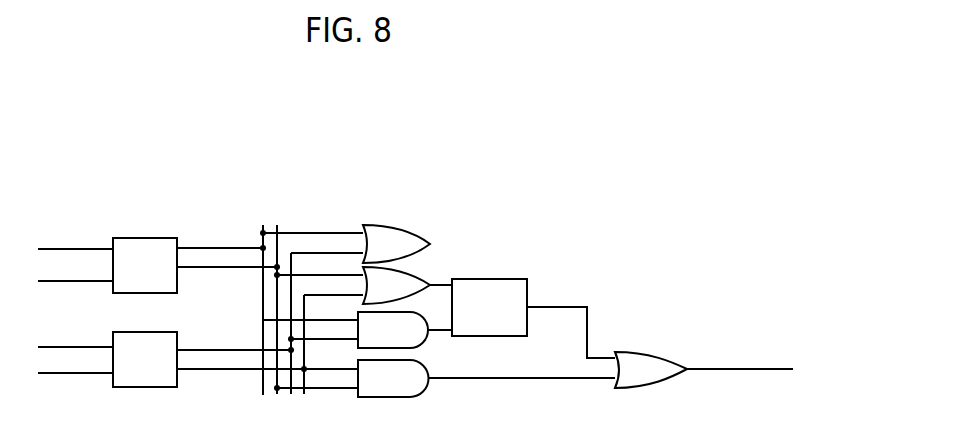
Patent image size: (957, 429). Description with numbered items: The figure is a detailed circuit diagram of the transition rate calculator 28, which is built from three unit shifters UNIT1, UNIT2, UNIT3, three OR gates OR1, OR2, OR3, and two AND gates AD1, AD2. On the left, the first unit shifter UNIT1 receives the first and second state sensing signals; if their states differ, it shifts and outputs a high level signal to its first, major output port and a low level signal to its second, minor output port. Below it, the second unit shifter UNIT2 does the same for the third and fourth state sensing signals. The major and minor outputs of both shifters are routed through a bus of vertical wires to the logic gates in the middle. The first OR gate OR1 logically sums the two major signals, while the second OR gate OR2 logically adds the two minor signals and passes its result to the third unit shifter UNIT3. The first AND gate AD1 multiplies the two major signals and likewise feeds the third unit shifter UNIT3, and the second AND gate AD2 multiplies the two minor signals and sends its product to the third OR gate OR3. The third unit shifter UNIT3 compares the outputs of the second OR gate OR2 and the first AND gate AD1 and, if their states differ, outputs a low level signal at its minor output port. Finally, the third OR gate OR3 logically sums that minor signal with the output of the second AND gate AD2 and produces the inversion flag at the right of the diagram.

The transition rate calculator 28 is at (592, 184).
The first unit shifter UNIT1 is at (145, 265).
The second unit shifter UNIT2 is at (145, 359).
The third unit shifter UNIT3 is at (489, 307).
The first OR gate OR1 is at (396, 244).
The second OR gate OR2 is at (396, 285).
The third OR gate OR3 is at (651, 370).
The first AND gate AD1 is at (393, 330).
The second AND gate AD2 is at (393, 378).